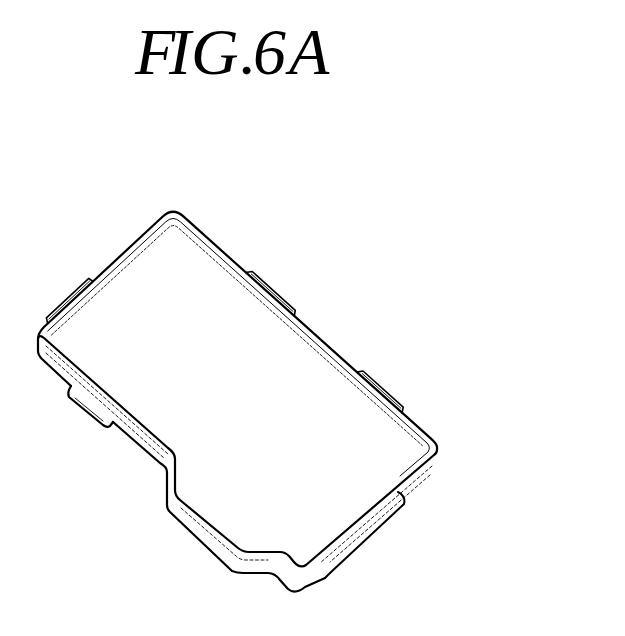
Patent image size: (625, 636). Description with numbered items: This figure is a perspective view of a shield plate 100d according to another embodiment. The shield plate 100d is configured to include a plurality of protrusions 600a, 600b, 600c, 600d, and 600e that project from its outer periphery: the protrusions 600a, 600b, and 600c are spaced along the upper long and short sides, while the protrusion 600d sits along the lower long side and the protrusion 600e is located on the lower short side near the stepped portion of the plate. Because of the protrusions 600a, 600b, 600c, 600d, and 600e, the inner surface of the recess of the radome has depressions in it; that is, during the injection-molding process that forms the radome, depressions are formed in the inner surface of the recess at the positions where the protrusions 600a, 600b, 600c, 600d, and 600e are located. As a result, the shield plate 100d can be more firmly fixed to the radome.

The shield plate 100d is at (468, 430).
The protrusion 600a is at (66, 301).
The protrusion 600b is at (275, 293).
The protrusion 600c is at (384, 392).
The protrusion 600d is at (372, 532).
The protrusion 600e is at (88, 408).